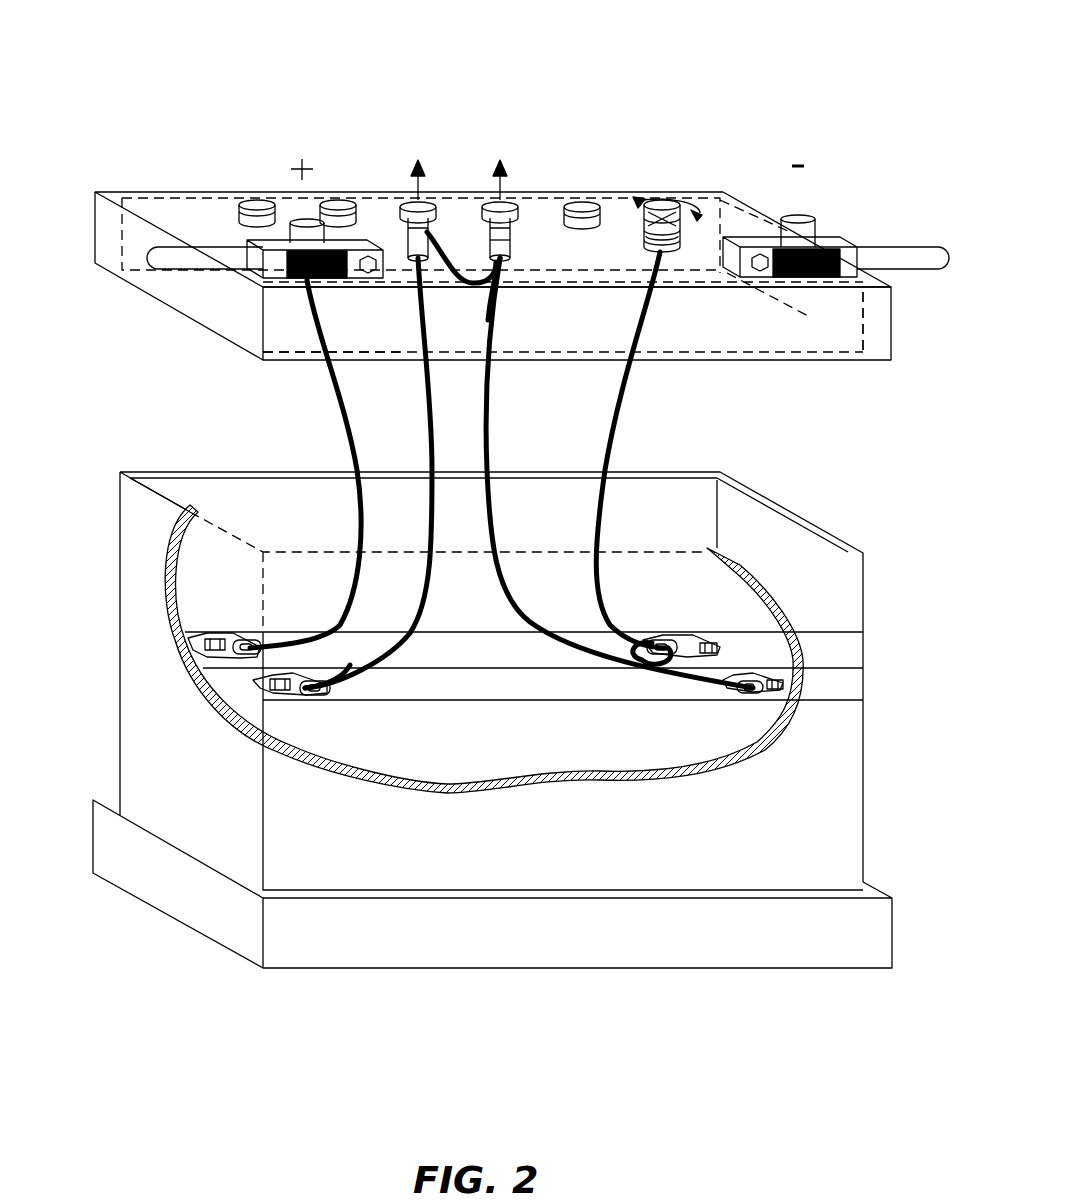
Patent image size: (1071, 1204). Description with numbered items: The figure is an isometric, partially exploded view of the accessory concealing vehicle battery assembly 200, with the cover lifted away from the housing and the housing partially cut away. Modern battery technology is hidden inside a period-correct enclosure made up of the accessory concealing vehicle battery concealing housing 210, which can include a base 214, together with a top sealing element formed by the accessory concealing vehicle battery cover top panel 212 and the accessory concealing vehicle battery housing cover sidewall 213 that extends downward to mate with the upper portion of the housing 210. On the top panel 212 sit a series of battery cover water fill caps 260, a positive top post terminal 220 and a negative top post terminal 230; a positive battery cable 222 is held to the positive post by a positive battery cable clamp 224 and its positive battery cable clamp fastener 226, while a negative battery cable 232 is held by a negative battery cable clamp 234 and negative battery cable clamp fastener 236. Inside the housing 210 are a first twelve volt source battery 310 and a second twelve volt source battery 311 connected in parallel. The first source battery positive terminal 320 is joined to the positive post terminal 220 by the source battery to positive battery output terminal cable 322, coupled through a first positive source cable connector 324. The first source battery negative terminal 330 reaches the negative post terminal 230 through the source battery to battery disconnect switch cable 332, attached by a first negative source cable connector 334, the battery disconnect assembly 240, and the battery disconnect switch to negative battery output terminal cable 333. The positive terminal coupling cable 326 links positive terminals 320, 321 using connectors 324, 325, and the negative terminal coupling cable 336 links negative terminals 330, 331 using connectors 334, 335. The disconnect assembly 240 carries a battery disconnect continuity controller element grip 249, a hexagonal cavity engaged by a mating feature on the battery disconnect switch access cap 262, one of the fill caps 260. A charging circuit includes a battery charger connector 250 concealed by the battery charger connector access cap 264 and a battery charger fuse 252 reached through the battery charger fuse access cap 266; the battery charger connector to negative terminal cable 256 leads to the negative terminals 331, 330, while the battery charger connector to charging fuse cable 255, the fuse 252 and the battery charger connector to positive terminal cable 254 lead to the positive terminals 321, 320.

The accessory concealing vehicle battery assembly 200 is at (133, 92).
The accessory concealing vehicle battery concealing housing 210 is at (833, 828).
The accessory concealing vehicle battery cover top panel 212 is at (543, 210).
The accessory concealing vehicle battery housing cover sidewall 213 is at (663, 327).
The housing base element 214 is at (617, 937).
The positive top post terminal 220 is at (303, 240).
The positive battery cable 222 is at (210, 262).
The positive battery cable clamp 224 is at (330, 280).
The positive battery cable clamp fastener 226 is at (374, 274).
The negative top post terminal 230 is at (802, 217).
The negative battery cable 232 is at (883, 257).
The negative battery cable clamp 234 is at (827, 277).
The negative battery cable clamp fastener 236 is at (767, 272).
The battery disconnect assembly 240 is at (640, 236).
The battery disconnect continuity controller element grip 249 is at (660, 195).
The battery charger connector 250 is at (507, 247).
The battery charger fuse 252 is at (428, 255).
The battery charger connector to positive terminal cable 254 is at (427, 620).
The battery charger connector to charging fuse cable 255 is at (512, 300).
The battery charger connector to negative terminal cable 256 is at (493, 497).
The battery cover water fill cap 260 is at (258, 200).
The battery disconnect switch access cap 262 is at (670, 200).
The battery charger connector access cap 264 is at (505, 200).
The battery charger fuse access cap 266 is at (425, 200).
The first 12 volt source battery 310 is at (487, 640).
The second 12 volt source battery 311 is at (547, 750).
The first 12 volt source battery positive terminal 320 is at (200, 642).
The second 12 volt source battery positive terminal 321 is at (288, 680).
The source battery to positive battery output terminal cable 322 is at (353, 497).
The first 12 volt positive source battery source cable connector 324 is at (240, 637).
The second 12 volt positive source battery source cable connector 325 is at (312, 690).
The first 12 volt source and second 12 volt source positive terminal coupling cable 326 is at (330, 653).
The first 12 volt source battery negative terminal 330 is at (707, 632).
The second 12 volt source battery negative terminal 331 is at (770, 681).
The source battery to battery disconnect switch cable 332 is at (617, 447).
The battery disconnect switch to negative battery output terminal cable 333 is at (743, 335).
The first 12 volt negative source battery source cable connector 334 is at (673, 638).
The second 12 volt negative source battery source cable connector 335 is at (773, 700).
The first 12 volt source and second 12 volt source negative terminal coupling cable 336 is at (630, 657).